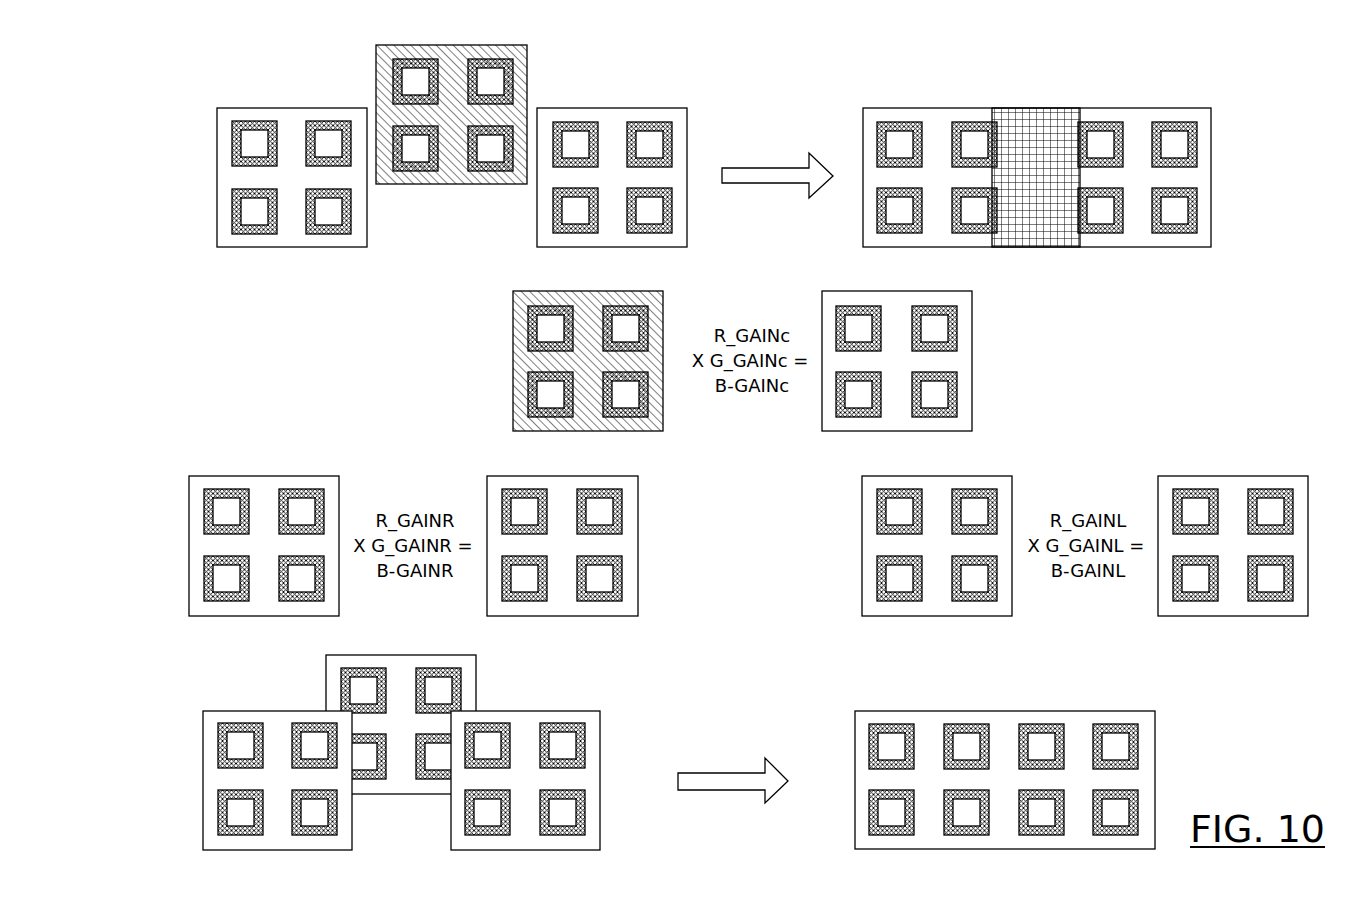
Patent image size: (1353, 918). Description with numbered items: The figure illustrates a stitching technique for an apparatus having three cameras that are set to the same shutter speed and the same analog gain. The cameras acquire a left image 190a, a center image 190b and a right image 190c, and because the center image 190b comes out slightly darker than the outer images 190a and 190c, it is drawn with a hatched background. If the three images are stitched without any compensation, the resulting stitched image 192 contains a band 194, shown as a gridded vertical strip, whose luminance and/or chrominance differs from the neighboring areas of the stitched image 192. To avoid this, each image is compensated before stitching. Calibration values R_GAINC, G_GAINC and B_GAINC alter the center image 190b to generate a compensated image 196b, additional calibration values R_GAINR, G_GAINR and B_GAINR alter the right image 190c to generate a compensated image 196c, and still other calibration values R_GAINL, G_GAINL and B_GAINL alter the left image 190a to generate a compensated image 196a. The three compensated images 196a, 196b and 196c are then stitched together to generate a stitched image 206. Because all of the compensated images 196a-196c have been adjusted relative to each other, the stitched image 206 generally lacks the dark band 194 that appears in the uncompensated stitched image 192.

The left image 190a is at (623, 108).
The center image 190b is at (444, 45).
The right image 190c is at (276, 108).
The stitched image 192 is at (1037, 164).
The band 194 is at (1037, 108).
The compensated image 196a is at (1218, 476).
The compensated image 196b is at (884, 291).
The compensated image 196c is at (549, 476).
The stitched image 206 is at (932, 711).